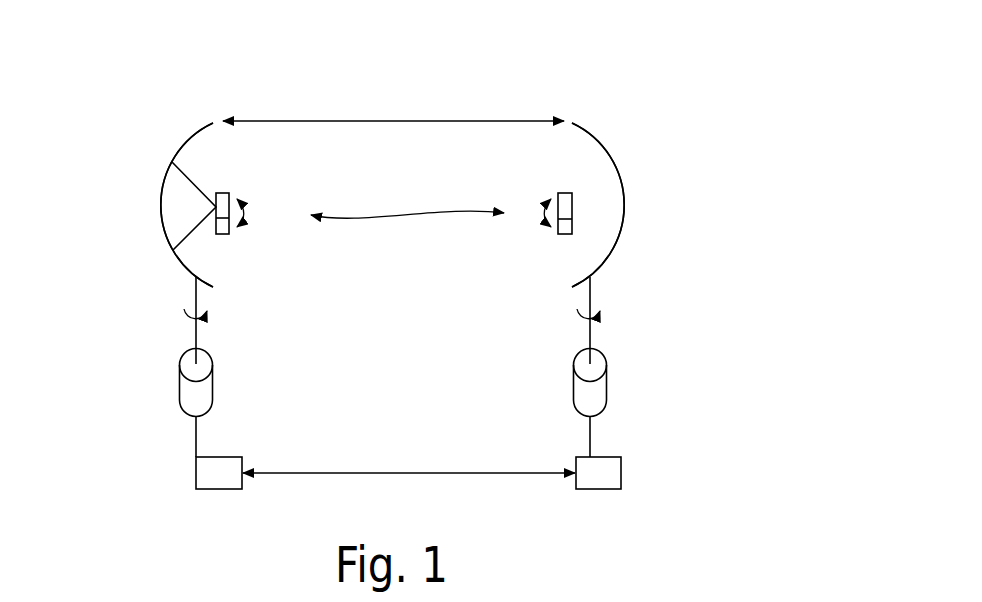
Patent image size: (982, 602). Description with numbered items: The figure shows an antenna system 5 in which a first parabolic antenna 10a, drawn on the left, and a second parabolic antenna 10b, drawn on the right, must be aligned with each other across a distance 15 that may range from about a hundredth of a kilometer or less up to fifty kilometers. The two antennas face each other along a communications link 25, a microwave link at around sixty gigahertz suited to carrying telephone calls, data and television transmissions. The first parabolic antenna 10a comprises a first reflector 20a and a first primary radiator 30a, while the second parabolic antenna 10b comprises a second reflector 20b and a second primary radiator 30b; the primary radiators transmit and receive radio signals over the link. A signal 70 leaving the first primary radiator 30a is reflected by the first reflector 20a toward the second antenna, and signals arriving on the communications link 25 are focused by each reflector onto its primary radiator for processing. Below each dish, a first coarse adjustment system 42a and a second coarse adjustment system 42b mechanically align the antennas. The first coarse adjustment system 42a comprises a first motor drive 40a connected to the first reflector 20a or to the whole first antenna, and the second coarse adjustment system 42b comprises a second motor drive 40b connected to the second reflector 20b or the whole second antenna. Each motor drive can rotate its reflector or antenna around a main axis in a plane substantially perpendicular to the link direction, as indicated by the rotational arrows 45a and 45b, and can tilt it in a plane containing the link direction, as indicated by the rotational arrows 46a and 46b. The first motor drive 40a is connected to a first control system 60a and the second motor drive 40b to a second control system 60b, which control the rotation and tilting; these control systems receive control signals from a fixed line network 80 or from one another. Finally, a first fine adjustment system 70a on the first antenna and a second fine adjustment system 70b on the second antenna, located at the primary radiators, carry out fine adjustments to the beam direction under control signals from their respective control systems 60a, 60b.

The antenna system 5 is at (546, 66).
The first parabolic antenna 10a is at (196, 119).
The second parabolic antenna 10b is at (639, 119).
The distance 15 is at (393, 109).
The first reflector 20a is at (160, 202).
The second reflector 20b is at (625, 200).
The communications link 25 is at (407, 203).
The first primary radiator 30a is at (219, 195).
The second primary radiator 30b is at (566, 194).
The first motor drive 40a is at (193, 395).
The second motor drive 40b is at (597, 395).
The first coarse adjustment system 42a is at (150, 390).
The second coarse adjustment system 42b is at (702, 390).
The rotational arrow 45a is at (220, 325).
The rotational arrow 45b is at (617, 321).
The rotational arrow 46a is at (263, 210).
The rotational arrow 46b is at (524, 206).
The first control system 60a is at (208, 472).
The second control system 60b is at (598, 472).
The signal 70 is at (192, 206).
The first fine adjustment system 70a is at (224, 232).
The second fine adjustment system 70b is at (562, 232).
The fixed line network 80 is at (409, 462).